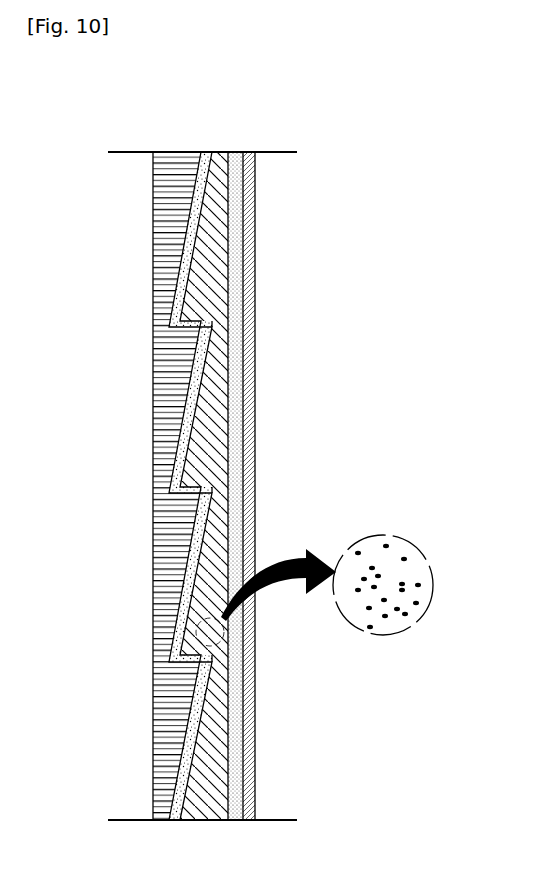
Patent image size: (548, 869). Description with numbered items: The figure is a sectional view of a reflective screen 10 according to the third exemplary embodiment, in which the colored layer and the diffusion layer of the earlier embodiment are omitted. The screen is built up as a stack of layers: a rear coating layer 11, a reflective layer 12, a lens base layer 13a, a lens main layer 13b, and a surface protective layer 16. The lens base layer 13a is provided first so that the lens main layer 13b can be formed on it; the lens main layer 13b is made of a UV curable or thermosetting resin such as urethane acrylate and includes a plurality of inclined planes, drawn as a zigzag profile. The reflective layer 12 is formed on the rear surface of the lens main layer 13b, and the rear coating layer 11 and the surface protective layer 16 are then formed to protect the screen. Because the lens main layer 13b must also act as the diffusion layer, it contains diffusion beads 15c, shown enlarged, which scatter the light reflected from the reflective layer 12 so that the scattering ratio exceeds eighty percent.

The reflective screen 10 is at (139, 131).
The rear coating layer 11 is at (159, 232).
The reflective layer 12 is at (181, 282).
The lens base layer 13a is at (235, 380).
The lens main layer 13b is at (205, 405).
The diffusion beads 15c is at (405, 558).
The surface protective layer 16 is at (253, 723).